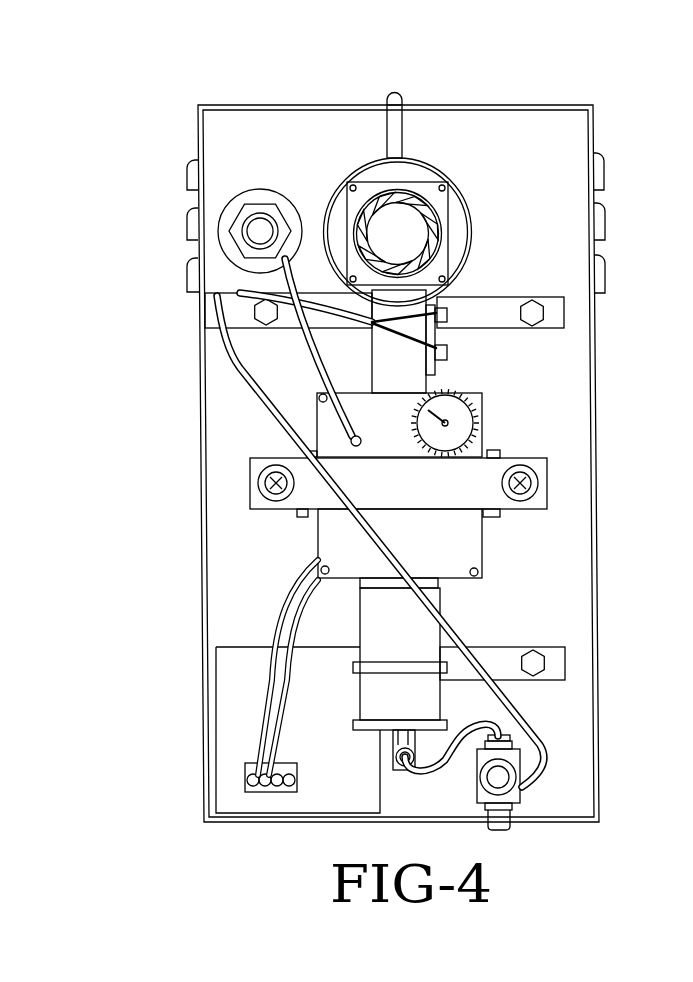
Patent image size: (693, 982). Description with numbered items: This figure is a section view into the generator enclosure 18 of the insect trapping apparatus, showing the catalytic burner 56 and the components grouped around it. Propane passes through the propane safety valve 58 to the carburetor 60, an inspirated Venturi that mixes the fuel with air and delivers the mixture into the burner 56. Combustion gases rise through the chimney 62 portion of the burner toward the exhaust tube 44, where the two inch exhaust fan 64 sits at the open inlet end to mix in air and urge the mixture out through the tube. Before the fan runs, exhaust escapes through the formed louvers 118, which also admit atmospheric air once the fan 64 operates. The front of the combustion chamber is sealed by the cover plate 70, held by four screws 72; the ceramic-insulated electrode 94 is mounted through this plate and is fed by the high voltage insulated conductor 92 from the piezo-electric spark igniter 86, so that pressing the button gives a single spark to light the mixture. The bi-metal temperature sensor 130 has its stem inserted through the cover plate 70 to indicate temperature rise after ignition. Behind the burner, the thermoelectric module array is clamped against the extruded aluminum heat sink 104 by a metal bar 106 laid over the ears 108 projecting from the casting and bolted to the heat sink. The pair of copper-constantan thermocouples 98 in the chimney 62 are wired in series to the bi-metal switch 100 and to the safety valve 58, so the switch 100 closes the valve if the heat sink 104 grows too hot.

The generator enclosure 18 is at (449, 104).
The exhaust tube 44 is at (405, 220).
The exhaust fan 64 is at (362, 188).
The piezo-electric spark igniter 86 is at (253, 192).
The louvers 118 is at (187, 220).
The bi-metal switch 100 is at (232, 300).
The high voltage insulated conductor 92 is at (305, 347).
The thermocouples 98 is at (443, 311).
The chimney 62 is at (392, 373).
The screws 72 is at (320, 392).
The cover plate 70 is at (325, 440).
The bi-metal temperature sensor 130 is at (492, 409).
The ears 108 is at (502, 453).
The metal bar 106 is at (540, 468).
The ceramic-insulated electrode 94 is at (357, 448).
The catalytic burner 56 is at (494, 541).
The carburetor 60 is at (440, 632).
The heat sink 104 is at (568, 625).
The propane safety valve 58 is at (522, 790).